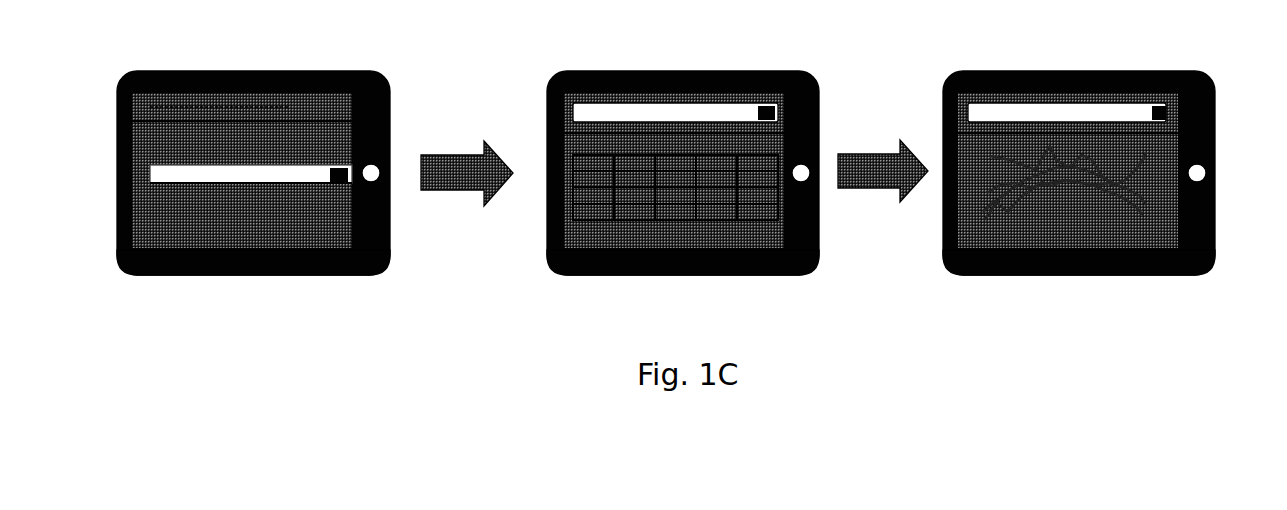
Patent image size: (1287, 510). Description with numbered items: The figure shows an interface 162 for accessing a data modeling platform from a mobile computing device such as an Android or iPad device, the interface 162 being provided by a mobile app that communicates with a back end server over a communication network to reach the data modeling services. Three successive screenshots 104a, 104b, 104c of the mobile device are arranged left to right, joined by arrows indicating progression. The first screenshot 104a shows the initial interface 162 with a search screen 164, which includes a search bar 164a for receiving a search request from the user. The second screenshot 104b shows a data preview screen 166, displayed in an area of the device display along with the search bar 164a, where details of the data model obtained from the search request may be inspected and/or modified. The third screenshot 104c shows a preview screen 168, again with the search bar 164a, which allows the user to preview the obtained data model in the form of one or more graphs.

The screenshot 104a is at (337, 52).
The screenshot 104b is at (731, 52).
The screenshot 104c is at (1120, 52).
The interface 162 is at (237, 277).
The search screen 164 is at (393, 233).
The search bar 164a is at (150, 183).
The data preview screen 166 is at (823, 233).
The preview screen 168 is at (1213, 233).